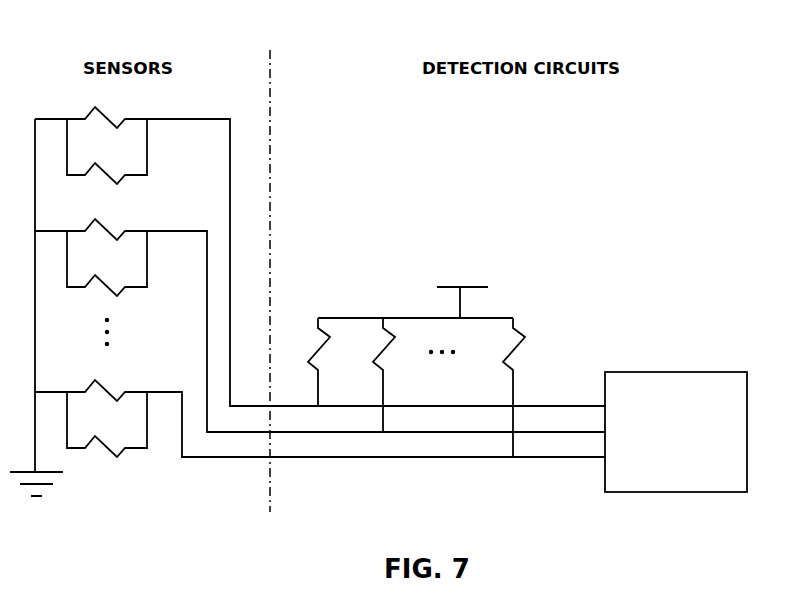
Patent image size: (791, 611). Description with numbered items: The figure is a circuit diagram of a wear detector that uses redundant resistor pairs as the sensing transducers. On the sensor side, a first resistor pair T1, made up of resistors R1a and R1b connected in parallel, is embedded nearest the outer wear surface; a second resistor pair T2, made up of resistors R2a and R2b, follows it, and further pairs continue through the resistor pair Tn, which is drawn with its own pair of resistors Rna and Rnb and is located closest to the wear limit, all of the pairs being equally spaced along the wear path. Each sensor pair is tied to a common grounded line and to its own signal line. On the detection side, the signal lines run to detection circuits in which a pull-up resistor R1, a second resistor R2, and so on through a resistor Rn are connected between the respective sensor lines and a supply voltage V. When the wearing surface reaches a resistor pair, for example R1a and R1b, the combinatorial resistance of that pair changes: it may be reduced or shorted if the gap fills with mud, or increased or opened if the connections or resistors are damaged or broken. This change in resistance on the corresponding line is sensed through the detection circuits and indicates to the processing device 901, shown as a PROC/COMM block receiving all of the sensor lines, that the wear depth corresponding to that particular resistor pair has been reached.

The processing device 901 is at (688, 388).
The first resistor pair T1 is at (307, 258).
The second resistor pair T2 is at (307, 327).
The resistor pair Tn is at (307, 420).
The resistor R1a is at (107, 109).
The resistor R1b is at (107, 151).
The resistor R2a is at (107, 221).
The resistor R2b is at (107, 263).
The sensor resistor (nth pair, a) Rna is at (107, 382).
The sensor resistor (nth pair, b) Rnb is at (107, 424).
The detection resistor R1 is at (305, 362).
The detection resistor R2 is at (370, 375).
The detection resistor Rn is at (500, 387).
The supply voltage V is at (462, 292).